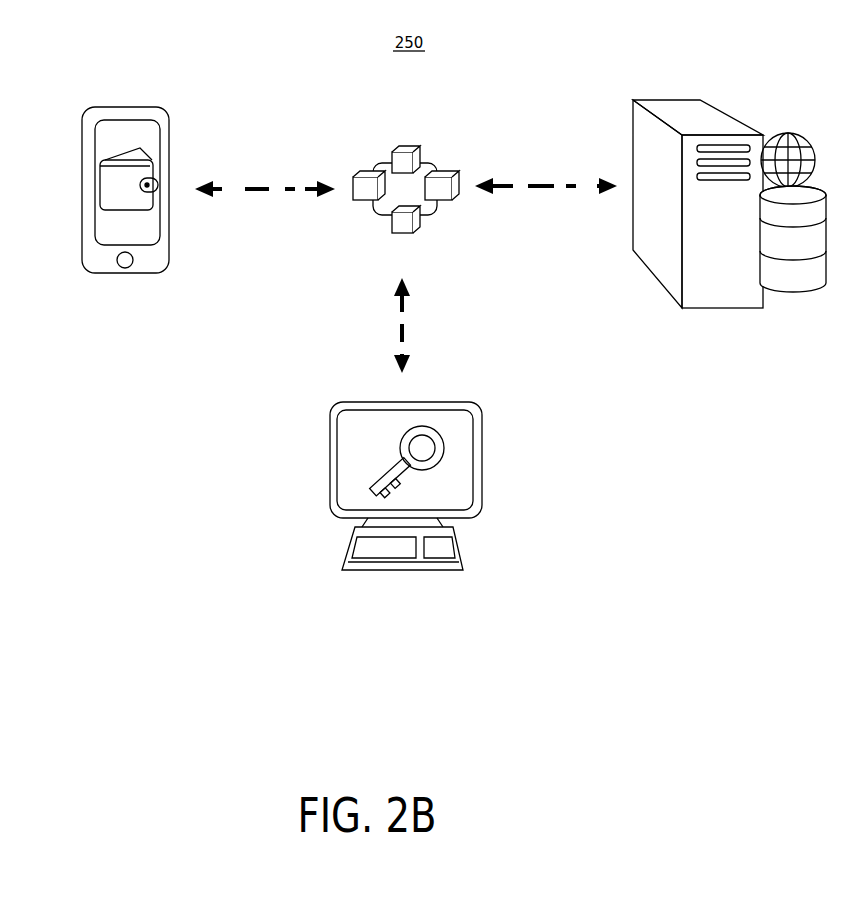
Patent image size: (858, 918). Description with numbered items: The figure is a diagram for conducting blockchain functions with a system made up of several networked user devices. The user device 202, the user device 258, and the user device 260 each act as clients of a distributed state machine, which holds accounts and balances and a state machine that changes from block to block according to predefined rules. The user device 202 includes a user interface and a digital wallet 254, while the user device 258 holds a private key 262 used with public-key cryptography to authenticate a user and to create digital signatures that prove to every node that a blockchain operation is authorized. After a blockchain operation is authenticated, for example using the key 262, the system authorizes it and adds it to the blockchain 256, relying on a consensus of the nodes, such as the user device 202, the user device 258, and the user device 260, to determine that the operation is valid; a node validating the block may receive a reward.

The user device 202 is at (128, 300).
The digital wallet 254 is at (151, 136).
The blockchain 256 is at (436, 245).
The user device 258 is at (495, 470).
The user device 260 is at (695, 88).
The key 262 is at (379, 428).